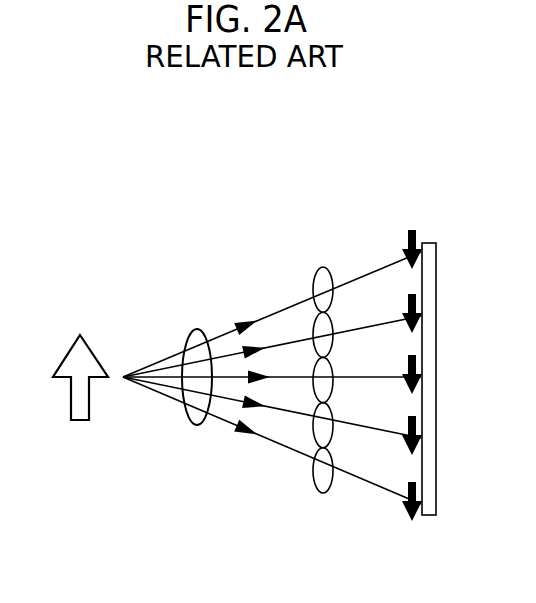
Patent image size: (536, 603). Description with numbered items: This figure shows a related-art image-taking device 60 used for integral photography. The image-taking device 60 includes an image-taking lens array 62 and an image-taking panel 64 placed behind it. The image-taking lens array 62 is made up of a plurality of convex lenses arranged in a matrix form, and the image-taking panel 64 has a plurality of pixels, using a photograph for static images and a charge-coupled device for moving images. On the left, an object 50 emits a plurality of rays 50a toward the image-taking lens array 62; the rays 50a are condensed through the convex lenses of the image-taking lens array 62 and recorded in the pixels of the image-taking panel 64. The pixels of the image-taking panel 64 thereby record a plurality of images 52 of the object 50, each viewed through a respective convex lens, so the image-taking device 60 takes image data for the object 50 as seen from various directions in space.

The object 50 is at (80, 335).
The rays 50a is at (197, 327).
The image-taking device 60 is at (392, 114).
The image-taking lens array 62 is at (323, 267).
The image-taking panel 64 is at (430, 243).
The images 52 is at (407, 517).